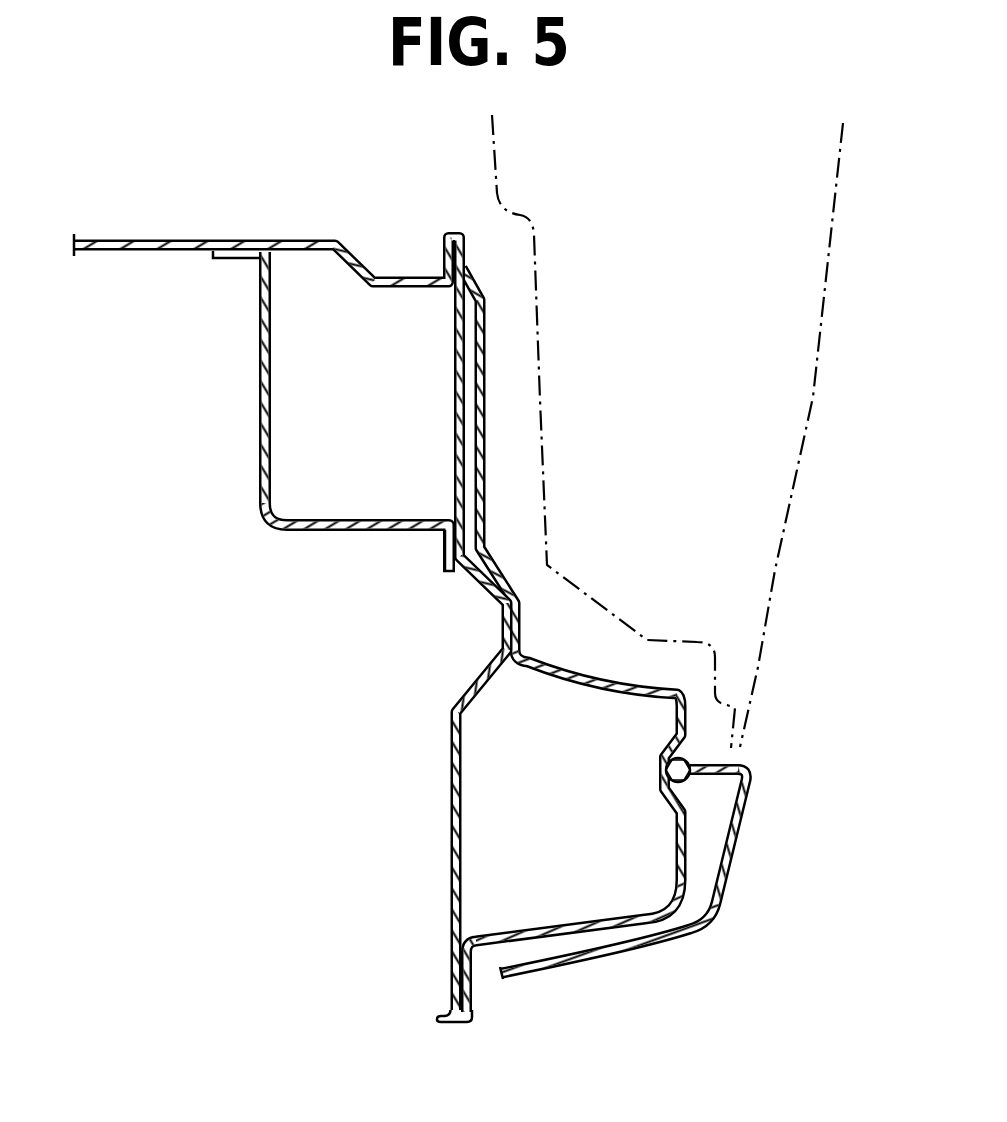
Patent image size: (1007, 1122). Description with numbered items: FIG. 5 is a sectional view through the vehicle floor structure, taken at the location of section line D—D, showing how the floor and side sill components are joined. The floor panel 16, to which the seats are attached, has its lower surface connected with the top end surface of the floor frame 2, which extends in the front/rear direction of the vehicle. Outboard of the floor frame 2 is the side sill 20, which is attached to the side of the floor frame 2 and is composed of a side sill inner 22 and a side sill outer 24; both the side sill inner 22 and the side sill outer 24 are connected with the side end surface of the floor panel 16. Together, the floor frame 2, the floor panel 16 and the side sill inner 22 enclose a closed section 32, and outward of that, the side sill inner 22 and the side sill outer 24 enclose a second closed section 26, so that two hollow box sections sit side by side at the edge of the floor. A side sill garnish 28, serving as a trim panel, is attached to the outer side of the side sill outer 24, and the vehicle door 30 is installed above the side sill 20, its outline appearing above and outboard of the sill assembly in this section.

The floor frame 2 is at (262, 450).
The floor panel 16 is at (166, 238).
The side sill 20 is at (637, 983).
The side sill inner 22 is at (561, 640).
The side sill outer 24 is at (673, 898).
The closed section 26 is at (548, 903).
The side sill garnish 28 is at (665, 912).
The vehicle door 30 is at (820, 357).
The closed section 32 is at (343, 495).